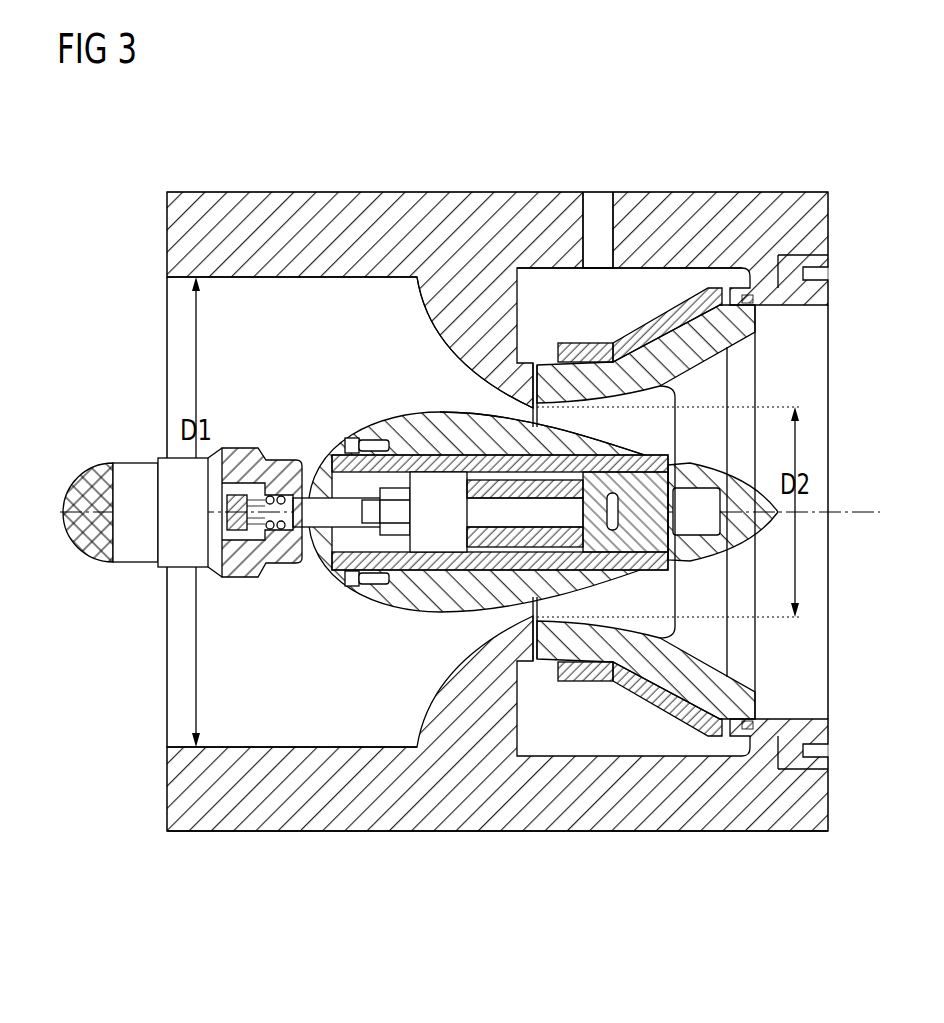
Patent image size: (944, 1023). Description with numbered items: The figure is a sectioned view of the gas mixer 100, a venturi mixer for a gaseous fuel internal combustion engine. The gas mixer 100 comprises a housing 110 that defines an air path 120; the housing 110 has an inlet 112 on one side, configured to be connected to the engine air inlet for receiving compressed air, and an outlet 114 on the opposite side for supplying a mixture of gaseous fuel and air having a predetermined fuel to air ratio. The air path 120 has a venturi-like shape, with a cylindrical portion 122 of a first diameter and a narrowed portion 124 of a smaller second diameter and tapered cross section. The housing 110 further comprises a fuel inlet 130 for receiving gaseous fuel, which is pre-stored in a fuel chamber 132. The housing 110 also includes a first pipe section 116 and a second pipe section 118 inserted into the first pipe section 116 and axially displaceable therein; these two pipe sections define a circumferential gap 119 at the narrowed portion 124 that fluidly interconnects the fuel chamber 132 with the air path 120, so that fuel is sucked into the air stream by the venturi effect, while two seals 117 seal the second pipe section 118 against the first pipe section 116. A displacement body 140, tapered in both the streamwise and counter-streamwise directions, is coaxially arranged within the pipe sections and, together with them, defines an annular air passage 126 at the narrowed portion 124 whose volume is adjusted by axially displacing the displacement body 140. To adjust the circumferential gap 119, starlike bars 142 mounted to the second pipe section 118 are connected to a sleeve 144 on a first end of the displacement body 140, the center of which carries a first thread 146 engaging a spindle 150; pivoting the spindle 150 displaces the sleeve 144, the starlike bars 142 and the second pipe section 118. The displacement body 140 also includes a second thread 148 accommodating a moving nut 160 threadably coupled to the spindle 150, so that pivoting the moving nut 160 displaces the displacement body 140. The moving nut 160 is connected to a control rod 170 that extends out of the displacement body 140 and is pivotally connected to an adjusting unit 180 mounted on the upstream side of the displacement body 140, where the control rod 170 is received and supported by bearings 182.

The gas mixer 100 is at (216, 143).
The housing 110 is at (167, 240).
The inlet 112 is at (167, 662).
The outlet 114 is at (829, 588).
The first pipe section 116 is at (383, 822).
The seals 117 is at (575, 358).
The second pipe section 118 is at (750, 718).
The circumferential gap 119 is at (535, 390).
The air path 120 is at (173, 373).
The cylindrical portion 122 is at (297, 290).
The narrowed portion 124 is at (524, 414).
The air passage 126 is at (503, 412).
The fuel inlet 130 is at (600, 205).
The fuel chamber 132 is at (650, 280).
The displacement body 140 is at (400, 420).
The starlike bars 142 is at (727, 402).
The sleeve 144 is at (650, 463).
The first thread 146 is at (629, 566).
The second thread 148 is at (389, 598).
The spindle 150 is at (582, 572).
The moving nut 160 is at (500, 539).
The control rod 170 is at (345, 518).
The adjusting unit 180 is at (100, 480).
The bearings 182 is at (293, 460).